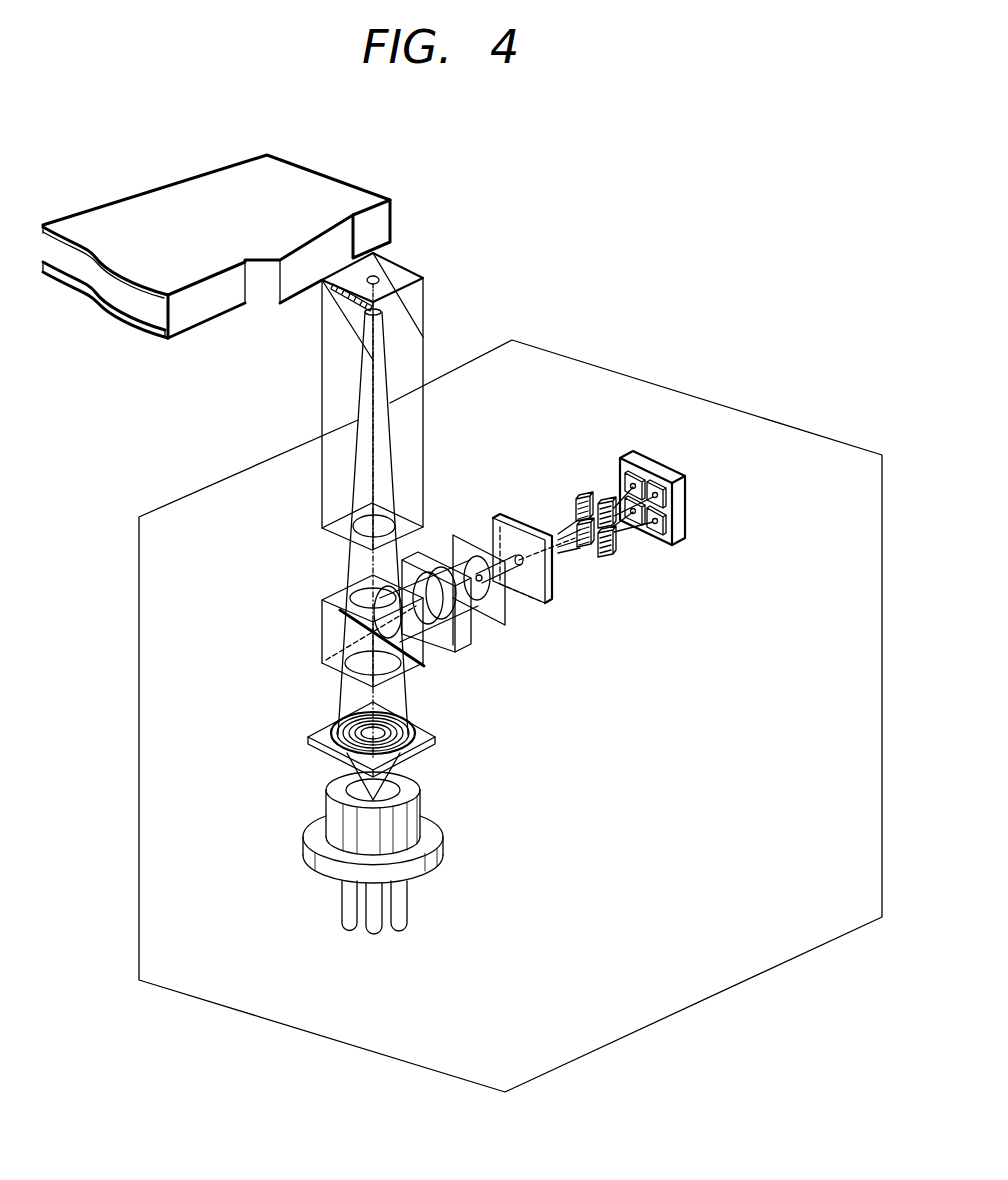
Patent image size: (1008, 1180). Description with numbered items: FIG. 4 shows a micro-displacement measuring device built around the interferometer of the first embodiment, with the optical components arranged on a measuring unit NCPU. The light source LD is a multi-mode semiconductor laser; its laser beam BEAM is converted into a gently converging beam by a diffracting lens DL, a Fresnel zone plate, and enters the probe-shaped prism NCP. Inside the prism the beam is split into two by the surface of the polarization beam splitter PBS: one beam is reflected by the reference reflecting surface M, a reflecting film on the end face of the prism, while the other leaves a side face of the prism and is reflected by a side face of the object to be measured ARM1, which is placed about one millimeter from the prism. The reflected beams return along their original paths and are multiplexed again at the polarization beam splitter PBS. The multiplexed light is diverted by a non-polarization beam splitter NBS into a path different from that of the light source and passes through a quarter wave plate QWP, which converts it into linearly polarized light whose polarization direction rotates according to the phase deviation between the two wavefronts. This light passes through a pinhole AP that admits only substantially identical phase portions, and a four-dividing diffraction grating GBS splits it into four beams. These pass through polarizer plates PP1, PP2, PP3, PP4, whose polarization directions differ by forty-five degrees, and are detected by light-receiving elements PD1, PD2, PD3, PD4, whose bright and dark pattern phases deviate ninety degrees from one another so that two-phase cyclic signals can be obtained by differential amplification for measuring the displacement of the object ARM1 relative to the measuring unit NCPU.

The object to be measured ARM1 is at (318, 193).
The reference reflecting surface M is at (407, 272).
The probe-shaped prism NCP is at (415, 358).
The polarization beam splitter PBS is at (347, 320).
The measuring unit NCPU is at (652, 380).
The non-polarization beam splitter NBS is at (322, 628).
The quarter wave plate QWP is at (447, 652).
The pinhole AP is at (482, 622).
The four-dividing diffraction grating GBS is at (536, 604).
The polarizer plate PP1 is at (605, 557).
The polarizer plate PP2 is at (597, 500).
The polarizer plate PP3 is at (575, 505).
The polarizer plate PP4 is at (586, 547).
The light-receiving element PD1 is at (688, 522).
The light-receiving element PD2 is at (660, 490).
The light-receiving element PD3 is at (632, 472).
The light-receiving element PD4 is at (640, 530).
The light beam BEAM is at (340, 690).
The diffracting lens DL is at (307, 742).
The light source LD is at (312, 805).